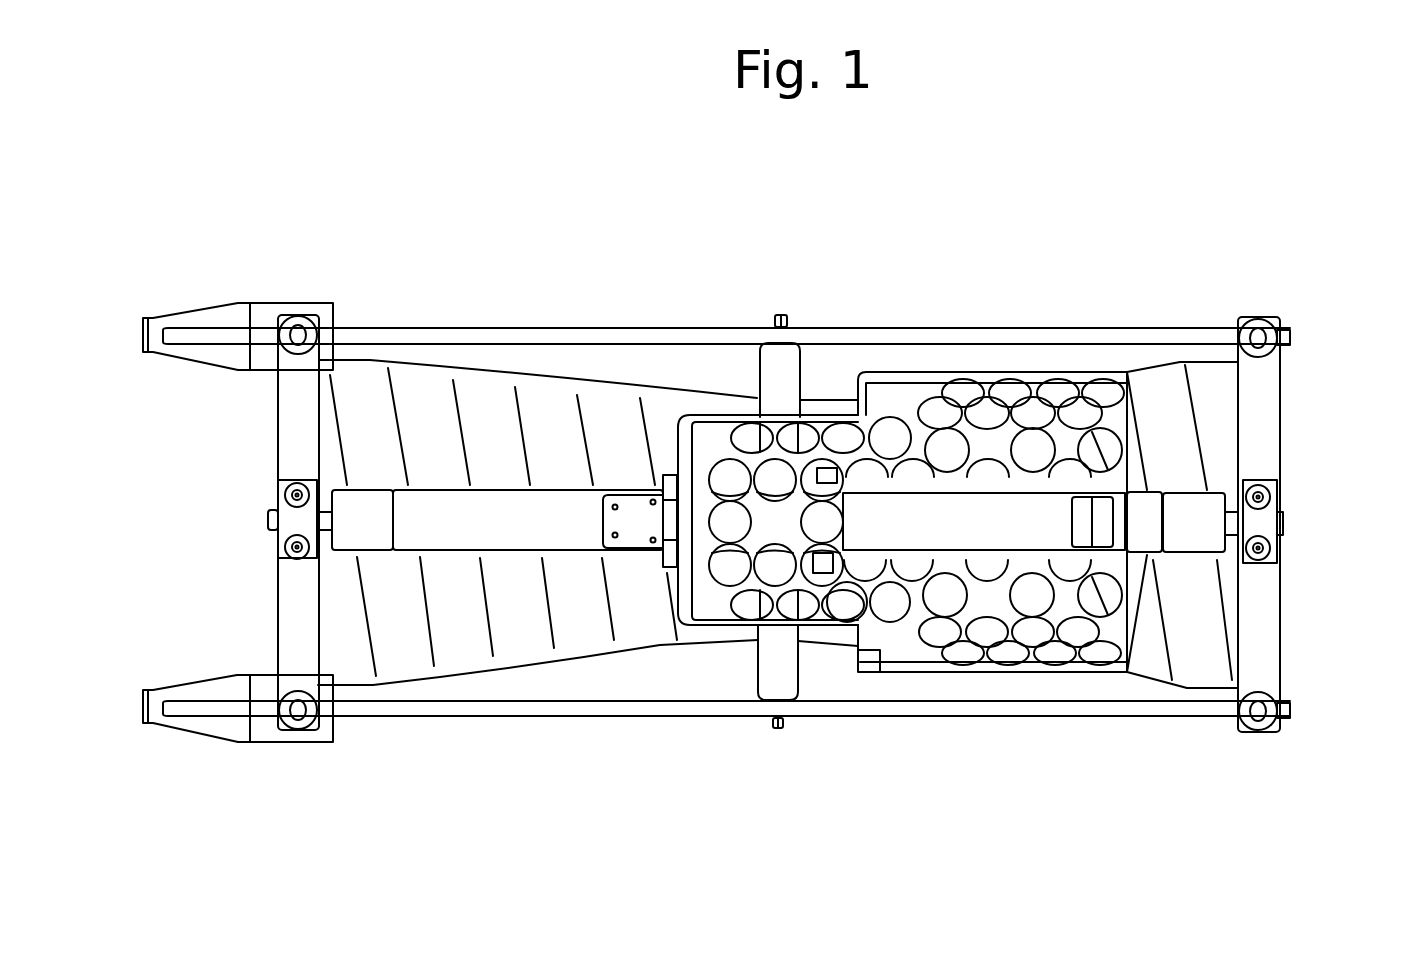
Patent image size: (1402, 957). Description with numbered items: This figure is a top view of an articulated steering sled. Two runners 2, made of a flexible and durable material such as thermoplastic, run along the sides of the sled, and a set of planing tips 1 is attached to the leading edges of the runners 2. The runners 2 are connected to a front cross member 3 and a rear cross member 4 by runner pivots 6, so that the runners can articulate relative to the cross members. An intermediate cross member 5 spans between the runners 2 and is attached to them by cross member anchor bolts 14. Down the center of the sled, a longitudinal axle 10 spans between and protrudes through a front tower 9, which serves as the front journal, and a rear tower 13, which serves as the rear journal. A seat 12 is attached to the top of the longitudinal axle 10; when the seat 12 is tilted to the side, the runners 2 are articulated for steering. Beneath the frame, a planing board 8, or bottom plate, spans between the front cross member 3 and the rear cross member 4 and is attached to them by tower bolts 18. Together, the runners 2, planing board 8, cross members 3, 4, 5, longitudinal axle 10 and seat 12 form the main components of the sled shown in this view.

The planing tip 1 is at (143, 320).
The runner 2 is at (1138, 335).
The front cross member 3 is at (295, 620).
The rear cross member 4 is at (1263, 612).
The intermediate cross member 5 is at (783, 662).
The runner pivot 6 is at (307, 315).
The planing board 8 is at (515, 630).
The front tower 9 is at (293, 520).
The longitudinal axle 10 is at (563, 527).
The seat 12 is at (878, 657).
The rear tower 13 is at (1262, 520).
The cross member anchor bolt 14 is at (775, 730).
The tower bolts 18 is at (283, 483).